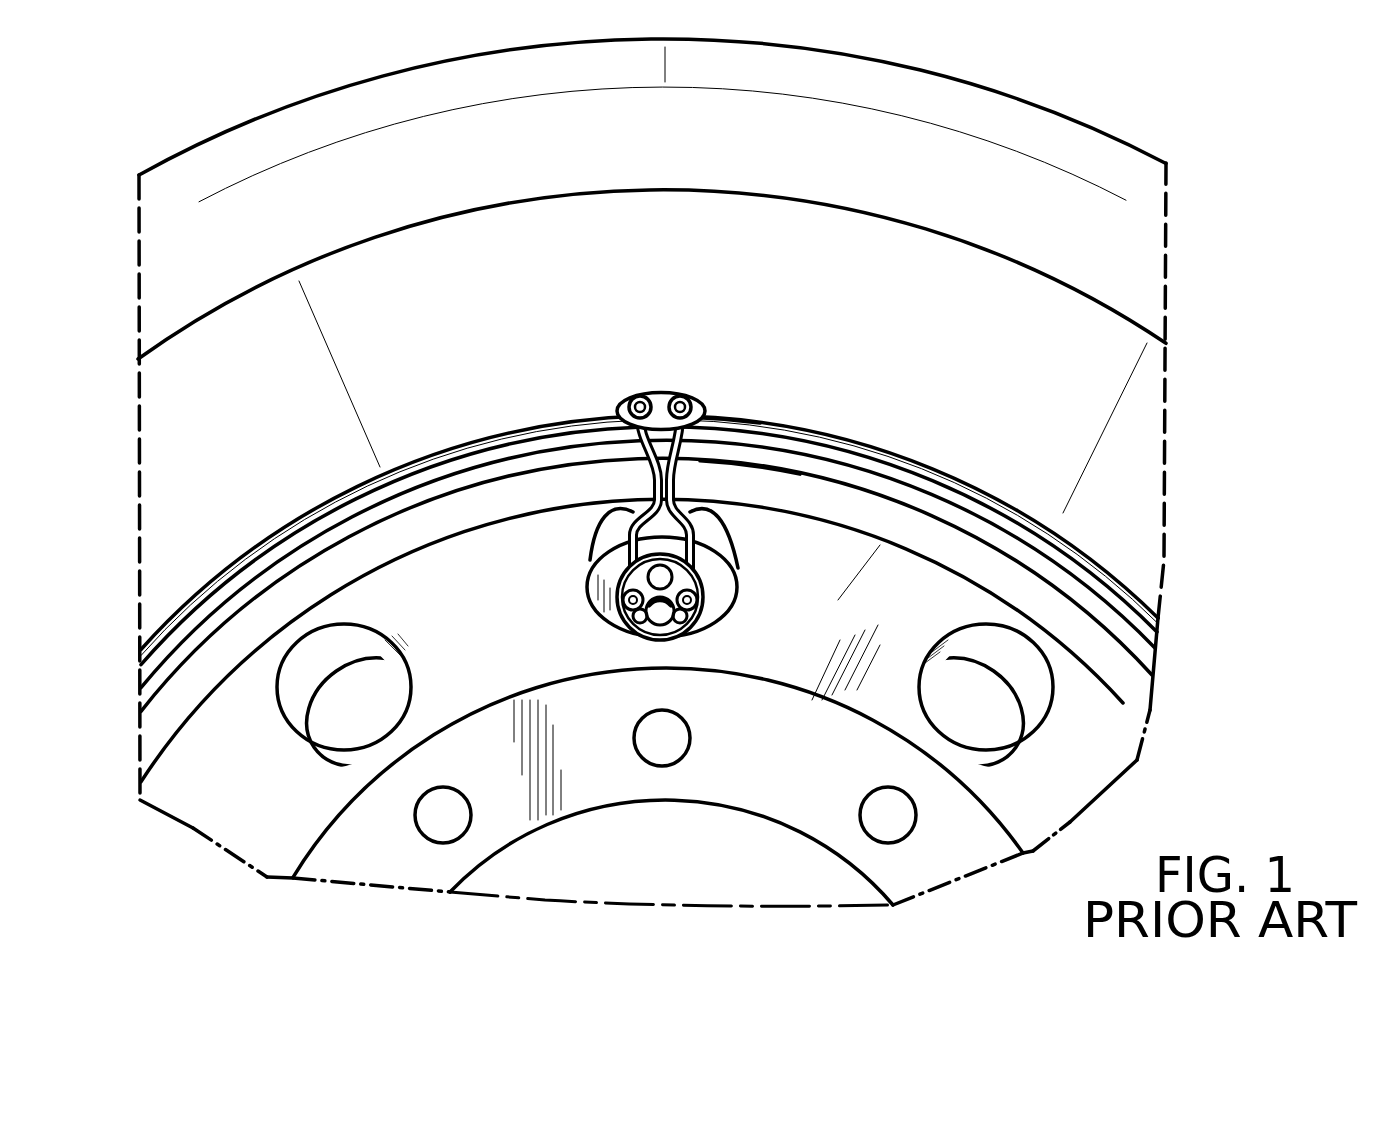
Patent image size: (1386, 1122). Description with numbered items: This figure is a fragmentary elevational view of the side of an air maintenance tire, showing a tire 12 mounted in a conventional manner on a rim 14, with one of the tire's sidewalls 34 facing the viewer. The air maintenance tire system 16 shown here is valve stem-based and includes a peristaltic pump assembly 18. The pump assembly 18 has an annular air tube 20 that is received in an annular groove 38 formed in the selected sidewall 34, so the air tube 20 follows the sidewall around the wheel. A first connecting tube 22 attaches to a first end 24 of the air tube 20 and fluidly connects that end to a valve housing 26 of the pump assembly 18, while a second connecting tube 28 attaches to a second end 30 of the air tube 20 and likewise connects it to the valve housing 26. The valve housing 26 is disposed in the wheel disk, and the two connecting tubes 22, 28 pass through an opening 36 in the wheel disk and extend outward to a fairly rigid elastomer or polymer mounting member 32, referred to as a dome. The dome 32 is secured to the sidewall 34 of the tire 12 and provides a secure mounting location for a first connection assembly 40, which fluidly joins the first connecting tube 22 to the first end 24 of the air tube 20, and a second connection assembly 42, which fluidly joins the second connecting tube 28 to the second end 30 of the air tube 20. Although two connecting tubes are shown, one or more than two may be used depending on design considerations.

The tire 12 is at (1088, 120).
The rim 14 is at (1093, 612).
The air maintenance tire (AMT) system 16 is at (732, 403).
The peristaltic pump assembly 18 is at (820, 423).
The annular air tube 20 is at (895, 452).
The first connecting tube 22 is at (730, 537).
The first end of the air tube 24 is at (752, 427).
The valve housing 26 is at (707, 600).
The second connecting tube 28 is at (597, 537).
The second end of the air tube 30 is at (455, 448).
The mounting member (dome) 32 is at (665, 390).
The sidewall 34 is at (175, 462).
The opening 36 is at (592, 573).
The annular groove 38 is at (955, 478).
The first connection assembly 40 is at (692, 397).
The second connection assembly 42 is at (632, 398).